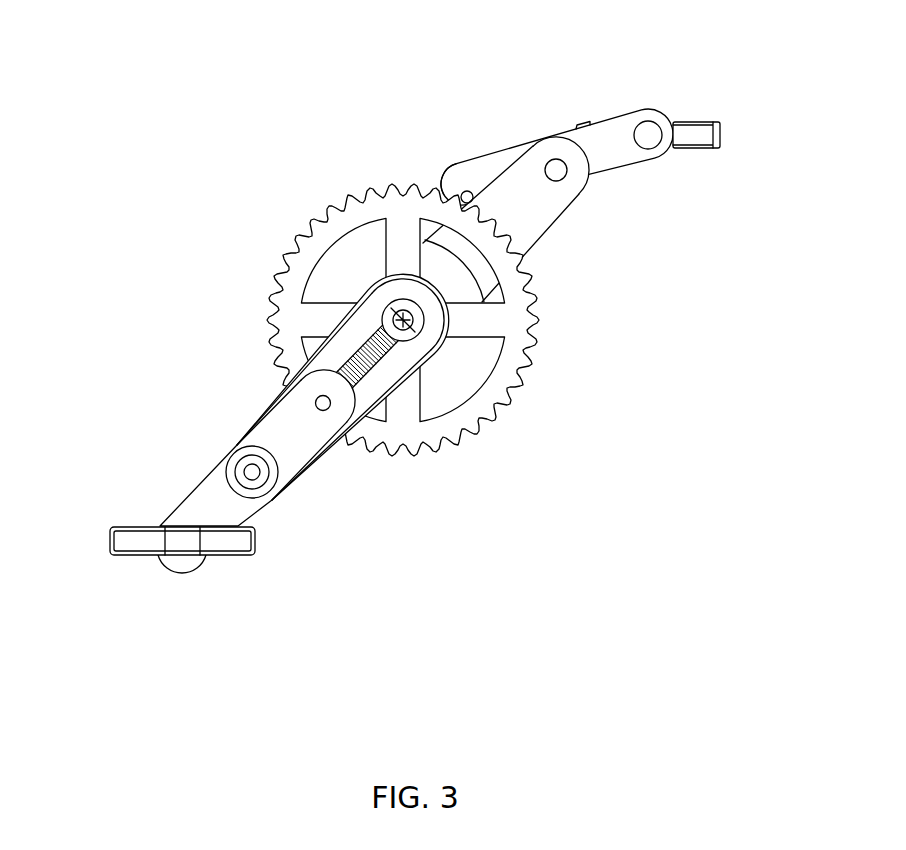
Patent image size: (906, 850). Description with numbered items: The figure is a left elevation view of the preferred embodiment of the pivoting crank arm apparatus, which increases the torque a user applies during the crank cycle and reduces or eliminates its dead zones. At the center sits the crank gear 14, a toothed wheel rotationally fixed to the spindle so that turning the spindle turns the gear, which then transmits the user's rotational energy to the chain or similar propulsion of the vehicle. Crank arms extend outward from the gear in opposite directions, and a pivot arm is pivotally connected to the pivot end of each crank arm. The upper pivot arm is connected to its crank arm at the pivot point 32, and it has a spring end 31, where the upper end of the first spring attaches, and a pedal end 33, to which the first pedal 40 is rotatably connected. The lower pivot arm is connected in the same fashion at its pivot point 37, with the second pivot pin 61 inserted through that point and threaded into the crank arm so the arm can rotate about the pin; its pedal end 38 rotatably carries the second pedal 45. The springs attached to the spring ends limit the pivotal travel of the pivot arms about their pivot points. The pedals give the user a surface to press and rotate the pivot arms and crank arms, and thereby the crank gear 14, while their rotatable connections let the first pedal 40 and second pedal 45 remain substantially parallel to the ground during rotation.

The crank gear 14 is at (518, 400).
The spring end of the first pivot arm 31 is at (432, 168).
The pivot point of the first pivot arm 32 is at (535, 130).
The pedal end of the first pivot arm 33 is at (634, 102).
The pivot point of the second pivot arm 37 is at (208, 450).
The pedal end of the second pivot arm 38 is at (146, 517).
The first pedal 40 is at (718, 150).
The second pedal 45 is at (110, 532).
The second pivot pin 61 is at (263, 485).